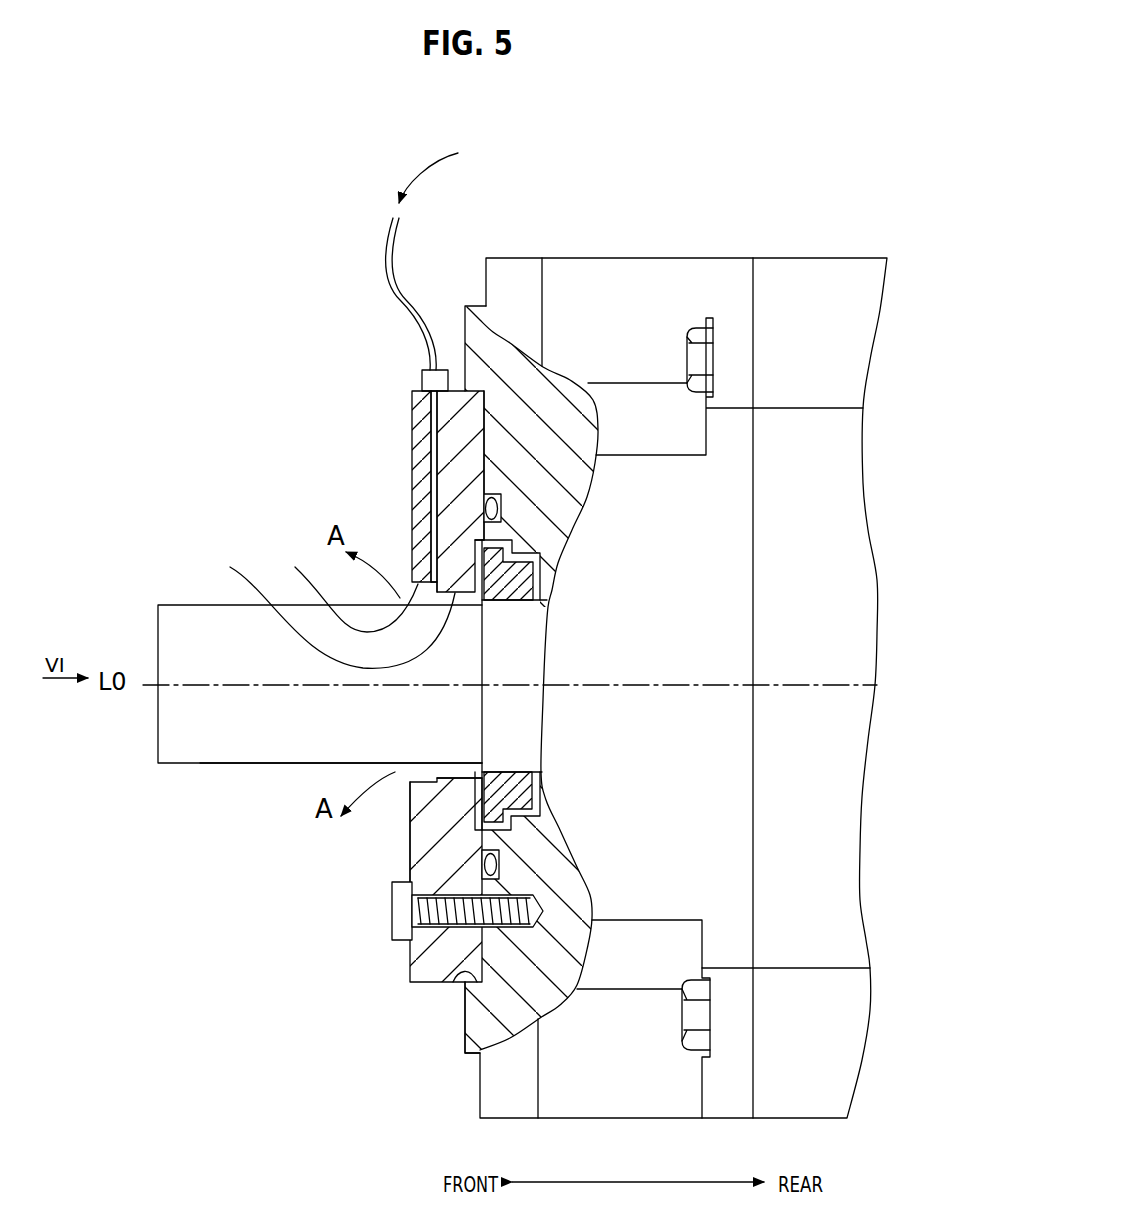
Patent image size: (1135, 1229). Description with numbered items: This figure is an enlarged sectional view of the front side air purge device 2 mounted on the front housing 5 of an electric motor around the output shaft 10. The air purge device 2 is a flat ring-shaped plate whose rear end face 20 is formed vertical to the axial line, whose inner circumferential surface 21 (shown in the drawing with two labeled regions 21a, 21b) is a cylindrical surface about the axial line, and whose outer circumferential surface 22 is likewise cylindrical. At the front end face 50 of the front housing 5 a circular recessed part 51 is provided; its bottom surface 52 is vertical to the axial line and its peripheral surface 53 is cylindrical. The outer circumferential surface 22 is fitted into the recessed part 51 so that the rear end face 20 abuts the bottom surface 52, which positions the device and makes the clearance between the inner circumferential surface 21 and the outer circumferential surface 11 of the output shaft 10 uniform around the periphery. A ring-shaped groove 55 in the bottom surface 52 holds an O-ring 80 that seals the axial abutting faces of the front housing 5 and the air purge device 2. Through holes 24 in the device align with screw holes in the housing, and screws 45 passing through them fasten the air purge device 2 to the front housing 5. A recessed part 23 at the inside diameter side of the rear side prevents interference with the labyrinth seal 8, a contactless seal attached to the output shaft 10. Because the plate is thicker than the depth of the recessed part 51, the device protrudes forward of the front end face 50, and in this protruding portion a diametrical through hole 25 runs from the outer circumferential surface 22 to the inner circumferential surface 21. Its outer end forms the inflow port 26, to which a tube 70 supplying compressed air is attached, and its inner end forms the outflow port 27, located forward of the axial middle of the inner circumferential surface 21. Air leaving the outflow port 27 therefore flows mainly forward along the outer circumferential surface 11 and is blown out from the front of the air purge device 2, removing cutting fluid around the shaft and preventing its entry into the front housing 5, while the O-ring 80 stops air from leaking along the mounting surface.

The air purge device 2 is at (399, 586).
The front housing 5 is at (547, 402).
The labyrinth seal 8 is at (500, 778).
The output shaft 10 is at (179, 766).
The outer circumferential surface 11 is at (250, 764).
The rear end face 20 is at (500, 840).
The inner circumferential surface 21 is at (321, 576).
The first detection portion 21a is at (342, 585).
The second detection portion 21b is at (327, 603).
The outer circumferential surface 22 is at (408, 922).
The recessed part 23 is at (488, 577).
The through holes 24 is at (412, 879).
The through hole 25 is at (427, 510).
The inflow port 26 is at (413, 400).
The outflow port 27 is at (428, 577).
The screws 45 is at (392, 893).
The front end face 50 is at (461, 1019).
The recessed part 51 is at (478, 485).
The bottom surface 52 is at (480, 437).
The peripheral surface 53 is at (468, 980).
The groove 55 is at (502, 512).
The tube 70 is at (396, 246).
The O-ring 80 is at (512, 542).